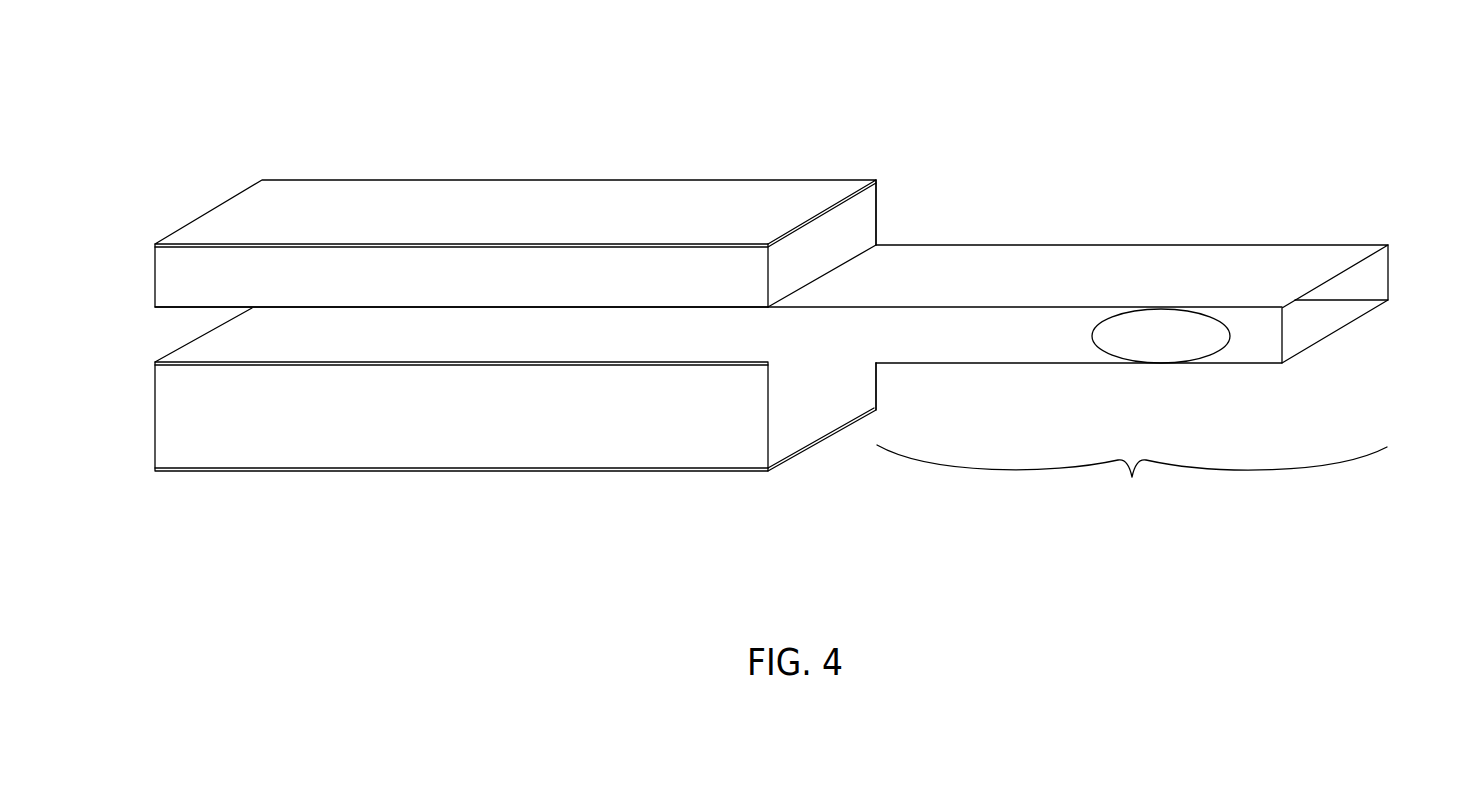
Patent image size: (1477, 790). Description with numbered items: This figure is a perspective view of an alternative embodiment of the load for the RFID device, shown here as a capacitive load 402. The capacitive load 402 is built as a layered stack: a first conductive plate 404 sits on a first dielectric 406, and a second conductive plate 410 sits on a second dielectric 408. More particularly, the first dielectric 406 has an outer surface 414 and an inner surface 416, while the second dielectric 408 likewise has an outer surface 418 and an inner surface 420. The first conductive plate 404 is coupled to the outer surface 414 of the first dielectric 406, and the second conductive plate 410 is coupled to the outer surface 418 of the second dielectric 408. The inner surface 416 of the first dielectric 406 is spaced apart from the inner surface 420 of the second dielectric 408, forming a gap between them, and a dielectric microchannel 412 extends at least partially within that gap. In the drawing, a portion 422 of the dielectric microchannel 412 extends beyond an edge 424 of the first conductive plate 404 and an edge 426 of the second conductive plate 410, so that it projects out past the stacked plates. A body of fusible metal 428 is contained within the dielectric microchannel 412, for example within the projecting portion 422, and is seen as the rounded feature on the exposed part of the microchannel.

The capacitive load 402 is at (768, 293).
The first conductive plate 404 is at (682, 235).
The first dielectric 406 is at (768, 272).
The second dielectric 408 is at (768, 382).
The second conductive plate 410 is at (516, 413).
The dielectric microchannel 412 is at (1165, 379).
The outer surface 414 is at (180, 243).
The inner surface 416 is at (170, 308).
The outer surface 418 is at (265, 474).
The inner surface 420 is at (180, 362).
The portion 422 is at (1132, 479).
The edge 424 is at (876, 180).
The edge 426 is at (876, 410).
The body of fusible metal 428 is at (1175, 355).